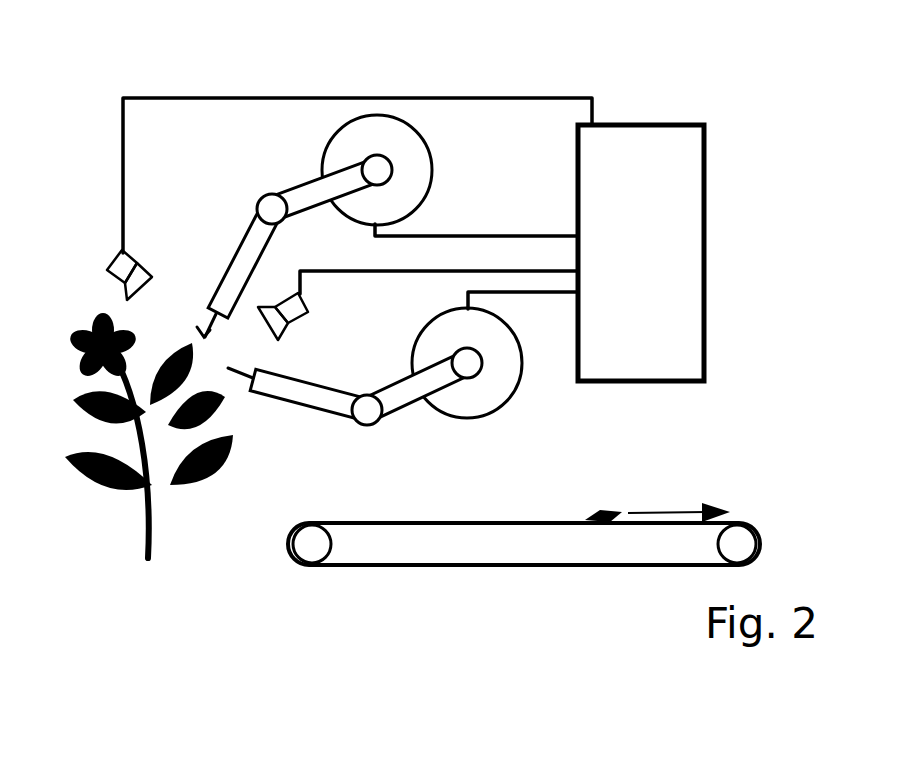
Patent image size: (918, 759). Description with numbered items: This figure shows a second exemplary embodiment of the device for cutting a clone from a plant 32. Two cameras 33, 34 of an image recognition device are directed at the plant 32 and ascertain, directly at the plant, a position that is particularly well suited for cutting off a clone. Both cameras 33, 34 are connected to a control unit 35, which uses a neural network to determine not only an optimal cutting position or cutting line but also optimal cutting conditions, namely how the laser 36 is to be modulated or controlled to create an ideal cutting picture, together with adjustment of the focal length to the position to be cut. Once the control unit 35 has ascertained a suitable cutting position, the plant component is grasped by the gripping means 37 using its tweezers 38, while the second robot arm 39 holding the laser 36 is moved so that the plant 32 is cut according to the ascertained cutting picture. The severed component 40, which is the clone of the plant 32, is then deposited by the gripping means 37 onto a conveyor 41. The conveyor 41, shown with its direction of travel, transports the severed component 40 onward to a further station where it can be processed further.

The plant 32 is at (100, 488).
The camera 33 is at (108, 260).
The camera 34 is at (308, 313).
The control unit 35 is at (663, 122).
The laser 36 is at (240, 377).
The gripping means 37 is at (297, 188).
The tweezers 38 is at (200, 333).
The second robot arm 39 is at (403, 406).
The severed component 40 is at (605, 512).
The conveyor 41 is at (345, 568).